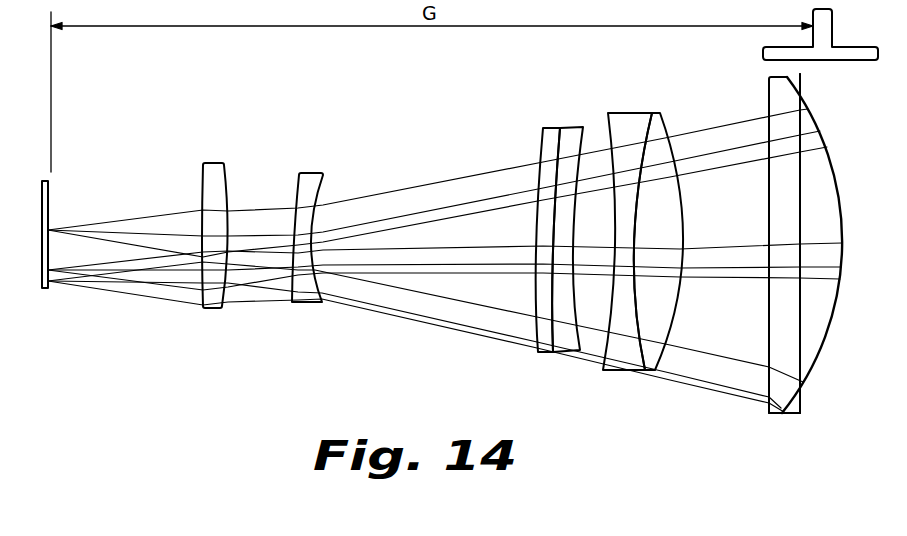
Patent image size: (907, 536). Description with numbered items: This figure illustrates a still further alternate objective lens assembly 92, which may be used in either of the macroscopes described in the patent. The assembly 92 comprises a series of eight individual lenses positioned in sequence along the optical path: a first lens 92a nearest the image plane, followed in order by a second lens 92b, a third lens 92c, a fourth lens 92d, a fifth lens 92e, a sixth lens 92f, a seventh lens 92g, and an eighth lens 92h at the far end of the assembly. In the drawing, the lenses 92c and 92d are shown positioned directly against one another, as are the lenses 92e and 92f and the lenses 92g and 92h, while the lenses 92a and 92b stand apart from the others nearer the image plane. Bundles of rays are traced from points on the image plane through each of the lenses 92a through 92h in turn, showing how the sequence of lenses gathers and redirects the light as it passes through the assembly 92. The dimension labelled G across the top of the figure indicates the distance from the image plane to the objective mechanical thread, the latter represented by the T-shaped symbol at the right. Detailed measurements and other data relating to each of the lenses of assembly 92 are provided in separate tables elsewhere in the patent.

The objective lens assembly 92 is at (210, 97).
The individual lens 92a is at (210, 163).
The individual lens 92b is at (308, 173).
The individual lens 92c is at (541, 145).
The individual lens 92d is at (567, 128).
The individual lens 92e is at (617, 112).
The individual lens 92f is at (665, 120).
The individual lens 92g is at (770, 97).
The individual lens 92h is at (813, 327).